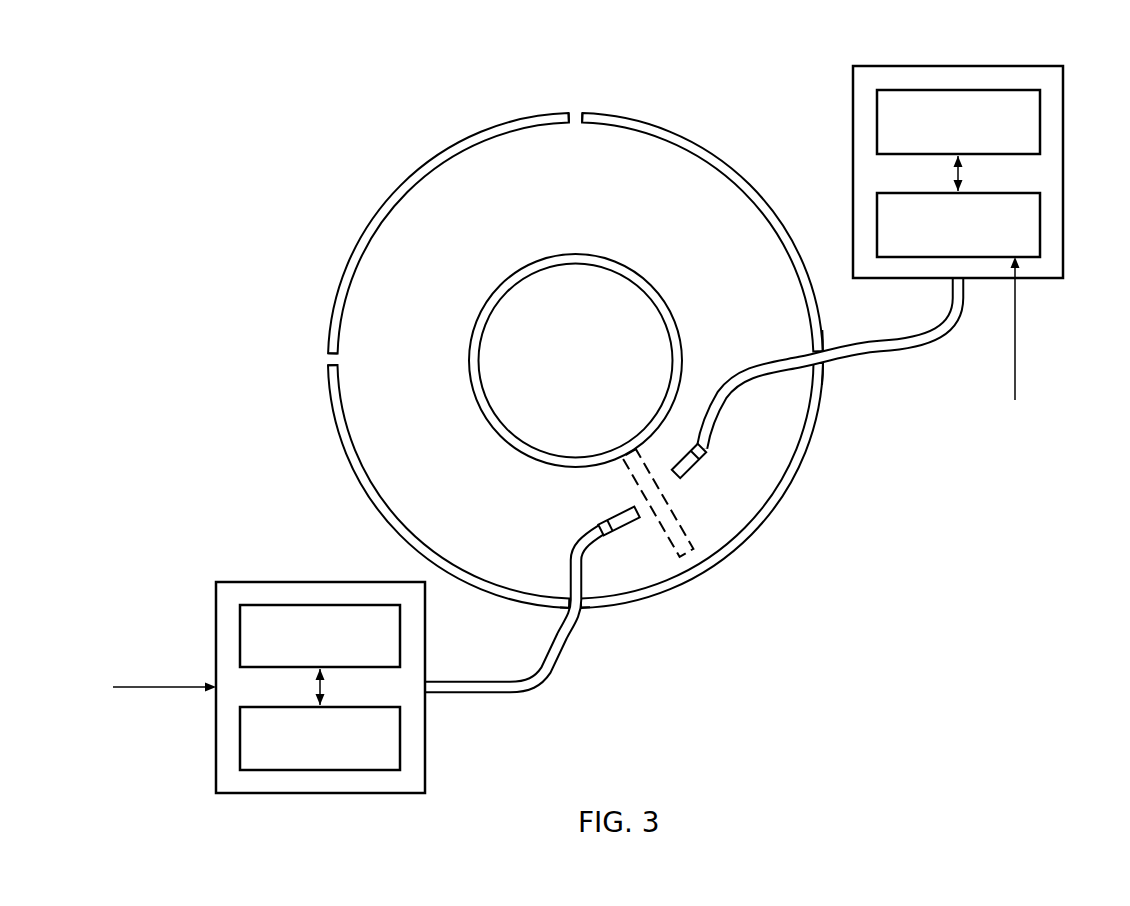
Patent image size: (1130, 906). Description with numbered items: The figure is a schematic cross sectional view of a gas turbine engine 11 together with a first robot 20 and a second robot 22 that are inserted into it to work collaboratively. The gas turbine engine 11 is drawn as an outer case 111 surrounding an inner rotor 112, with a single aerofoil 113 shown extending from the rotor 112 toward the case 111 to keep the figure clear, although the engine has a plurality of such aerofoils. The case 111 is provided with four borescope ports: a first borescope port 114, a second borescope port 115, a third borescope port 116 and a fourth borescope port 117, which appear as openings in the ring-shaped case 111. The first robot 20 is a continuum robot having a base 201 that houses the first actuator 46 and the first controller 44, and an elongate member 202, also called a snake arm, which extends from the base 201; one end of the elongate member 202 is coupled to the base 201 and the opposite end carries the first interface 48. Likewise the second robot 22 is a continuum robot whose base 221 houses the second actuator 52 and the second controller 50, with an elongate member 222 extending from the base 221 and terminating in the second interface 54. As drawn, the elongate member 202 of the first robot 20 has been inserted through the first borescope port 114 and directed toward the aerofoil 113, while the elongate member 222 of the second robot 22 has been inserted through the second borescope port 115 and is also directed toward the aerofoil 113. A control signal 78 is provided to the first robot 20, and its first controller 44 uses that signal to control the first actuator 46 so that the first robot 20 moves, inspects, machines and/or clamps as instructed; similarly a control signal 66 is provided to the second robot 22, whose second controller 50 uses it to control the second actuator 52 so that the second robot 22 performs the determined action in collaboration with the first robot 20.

The gas turbine engine 11 is at (565, 360).
The case 111 is at (792, 479).
The rotor 112 is at (575, 253).
The aerofoil 113 is at (681, 523).
The first borescope port 114 is at (586, 615).
The second borescope port 115 is at (832, 376).
The third borescope port 116 is at (580, 97).
The fourth borescope port 117 is at (316, 361).
The first robot 20 is at (337, 661).
The base 201 is at (290, 582).
The elongate member 202 is at (546, 673).
The second robot 22 is at (947, 147).
The base 221 is at (957, 89).
The elongate member 222 is at (905, 352).
The first controller 44 is at (240, 735).
The first actuator 46 is at (240, 632).
The first interface 48 is at (612, 526).
The second controller 50 is at (1042, 122).
The second actuator 52 is at (1042, 225).
The second interface 54 is at (689, 455).
The control signal 66 is at (1017, 335).
The control signal 78 is at (140, 690).